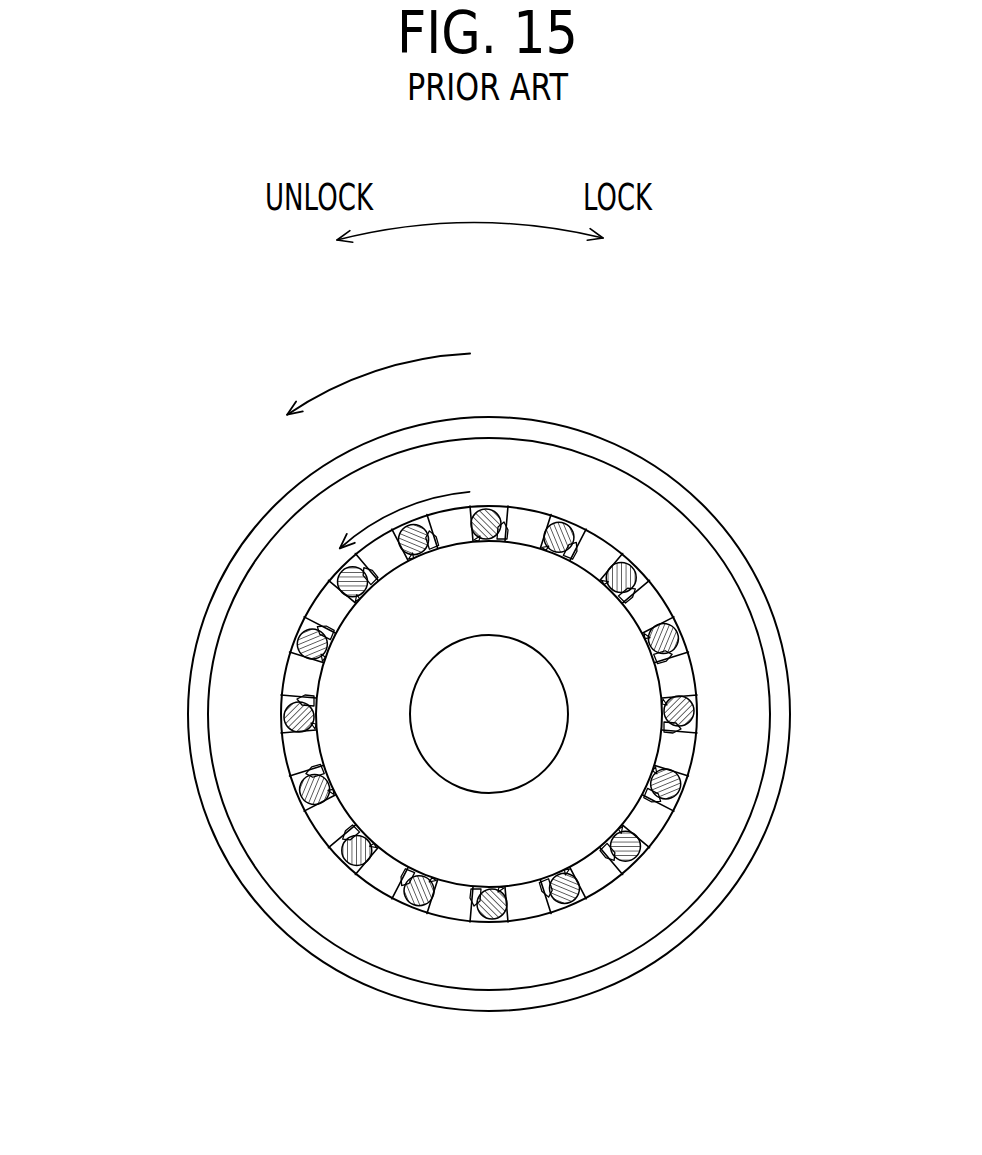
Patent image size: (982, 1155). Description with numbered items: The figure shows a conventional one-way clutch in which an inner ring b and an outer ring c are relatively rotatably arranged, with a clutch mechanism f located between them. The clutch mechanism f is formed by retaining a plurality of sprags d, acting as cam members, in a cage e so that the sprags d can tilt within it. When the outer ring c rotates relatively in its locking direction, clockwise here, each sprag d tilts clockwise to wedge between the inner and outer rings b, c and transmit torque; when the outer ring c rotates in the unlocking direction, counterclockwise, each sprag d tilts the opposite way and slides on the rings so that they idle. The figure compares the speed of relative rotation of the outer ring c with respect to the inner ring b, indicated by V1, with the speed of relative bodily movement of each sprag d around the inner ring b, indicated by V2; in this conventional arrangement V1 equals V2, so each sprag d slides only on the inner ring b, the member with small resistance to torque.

The one-way clutch assembly (prior art) A is at (82, 323).
The inner ring b is at (665, 680).
The outer ring c is at (706, 502).
The sprag d is at (560, 522).
The cage e is at (318, 597).
The clutch mechanism f is at (668, 600).
The speed of relative rotation of the outer ring V1 is at (405, 363).
The speed of relative bodily movement of each sprag V2 is at (438, 490).